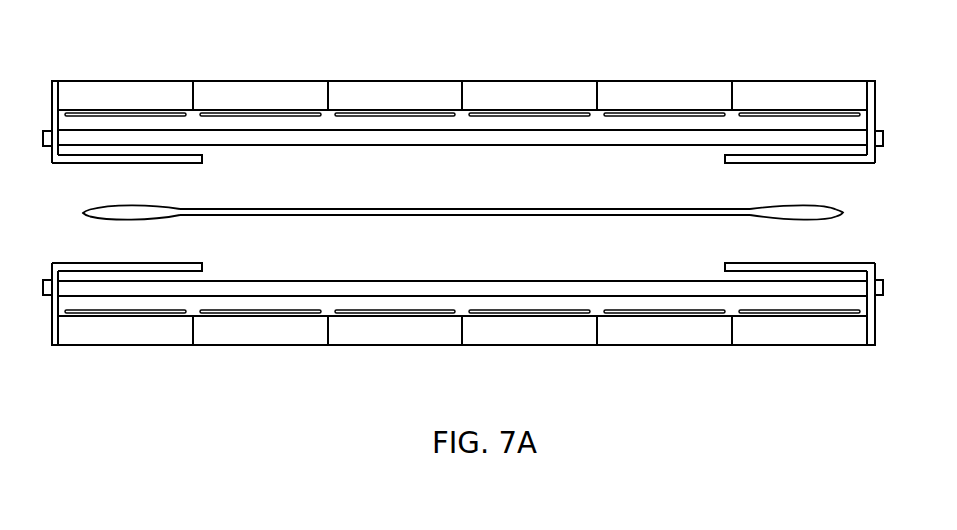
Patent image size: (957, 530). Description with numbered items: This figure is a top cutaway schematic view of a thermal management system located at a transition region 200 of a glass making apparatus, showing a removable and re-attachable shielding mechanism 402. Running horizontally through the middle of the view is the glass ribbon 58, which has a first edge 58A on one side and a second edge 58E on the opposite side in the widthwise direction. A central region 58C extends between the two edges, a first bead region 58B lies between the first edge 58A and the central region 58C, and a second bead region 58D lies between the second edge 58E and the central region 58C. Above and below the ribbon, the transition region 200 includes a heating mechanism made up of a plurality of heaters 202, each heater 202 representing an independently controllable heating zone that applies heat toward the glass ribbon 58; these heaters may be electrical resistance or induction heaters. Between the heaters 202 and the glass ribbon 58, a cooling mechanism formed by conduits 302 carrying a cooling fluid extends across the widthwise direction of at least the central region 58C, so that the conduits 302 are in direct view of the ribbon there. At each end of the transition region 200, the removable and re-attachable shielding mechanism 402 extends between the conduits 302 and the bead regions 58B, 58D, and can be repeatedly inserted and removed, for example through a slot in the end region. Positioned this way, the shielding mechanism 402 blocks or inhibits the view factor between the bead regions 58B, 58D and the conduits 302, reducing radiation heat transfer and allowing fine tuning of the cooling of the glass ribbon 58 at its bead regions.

The transition region 200 is at (712, 50).
The heater 202 is at (137, 80).
The conduit 302 is at (328, 146).
The removable and re-attachable shielding mechanism 402 is at (65, 165).
The glass ribbon 58 is at (466, 211).
The first edge 58A is at (92, 219).
The first bead region 58B is at (128, 204).
The central region 58C is at (465, 208).
The second bead region 58D is at (808, 205).
The second edge 58E is at (833, 221).